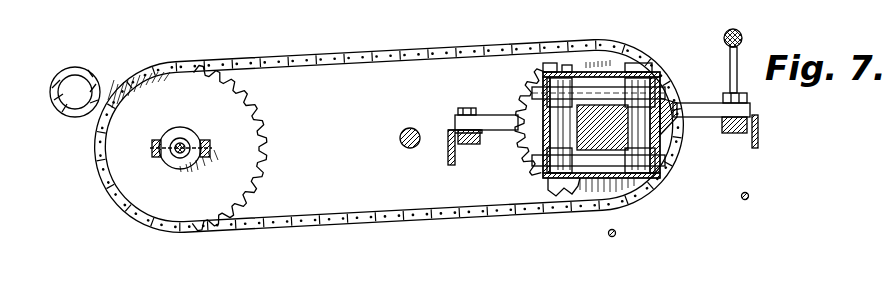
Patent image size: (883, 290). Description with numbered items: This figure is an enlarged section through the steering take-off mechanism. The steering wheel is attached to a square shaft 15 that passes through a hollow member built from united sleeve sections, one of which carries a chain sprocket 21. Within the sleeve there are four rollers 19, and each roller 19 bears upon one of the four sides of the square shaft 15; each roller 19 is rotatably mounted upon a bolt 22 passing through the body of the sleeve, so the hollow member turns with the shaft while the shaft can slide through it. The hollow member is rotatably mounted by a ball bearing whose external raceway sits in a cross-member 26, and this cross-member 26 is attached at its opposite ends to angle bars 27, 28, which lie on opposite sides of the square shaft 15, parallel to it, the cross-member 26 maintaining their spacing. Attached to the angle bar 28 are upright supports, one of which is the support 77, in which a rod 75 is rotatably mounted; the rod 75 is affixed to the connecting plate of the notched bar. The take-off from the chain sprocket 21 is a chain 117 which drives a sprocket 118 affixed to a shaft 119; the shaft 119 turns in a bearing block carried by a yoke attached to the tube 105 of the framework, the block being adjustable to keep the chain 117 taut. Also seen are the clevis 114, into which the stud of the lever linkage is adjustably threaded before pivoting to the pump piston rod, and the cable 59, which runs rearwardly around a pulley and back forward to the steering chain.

The tube 105 is at (51, 88).
The chain 117 is at (331, 68).
The sprocket 118 is at (240, 126).
The shaft 119 is at (174, 164).
The clevis 114 is at (402, 146).
The cross-member 26 is at (490, 115).
The angle bar 27 is at (448, 158).
The angle bar 28 is at (759, 138).
The rod 75 is at (740, 31).
The upright support 77 is at (740, 58).
The roller 19 is at (543, 133).
The chain sprocket 21 is at (622, 78).
The square shaft 15 is at (598, 103).
The bolt 22 is at (546, 173).
The cable 59 is at (749, 197).